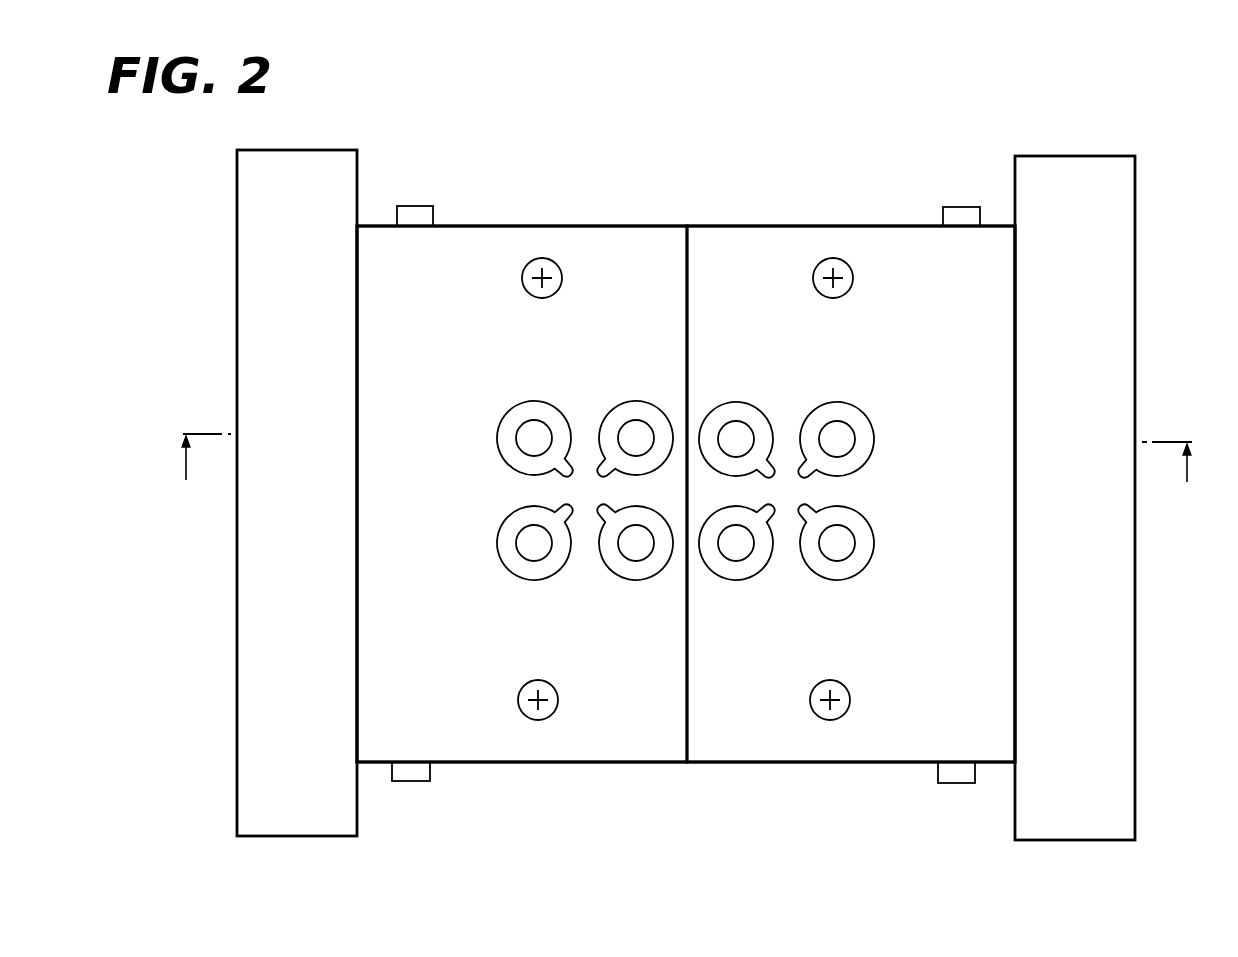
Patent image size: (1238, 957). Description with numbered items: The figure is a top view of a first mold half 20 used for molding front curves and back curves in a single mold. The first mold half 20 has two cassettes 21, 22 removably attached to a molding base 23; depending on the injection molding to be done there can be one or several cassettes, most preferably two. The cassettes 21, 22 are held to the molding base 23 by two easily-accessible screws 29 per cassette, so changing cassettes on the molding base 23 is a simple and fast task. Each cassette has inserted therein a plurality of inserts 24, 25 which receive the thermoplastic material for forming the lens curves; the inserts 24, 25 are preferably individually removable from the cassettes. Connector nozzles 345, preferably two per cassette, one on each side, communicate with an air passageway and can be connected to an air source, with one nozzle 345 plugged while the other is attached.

The first mold half 20 is at (750, 130).
The cassette 21 is at (614, 243).
The cassette 22 is at (757, 243).
The molding base 23 is at (1120, 263).
The inserts 24 is at (621, 418).
The inserts 25 is at (822, 418).
The screws 29 is at (535, 260).
The connector nozzles 345 is at (417, 218).